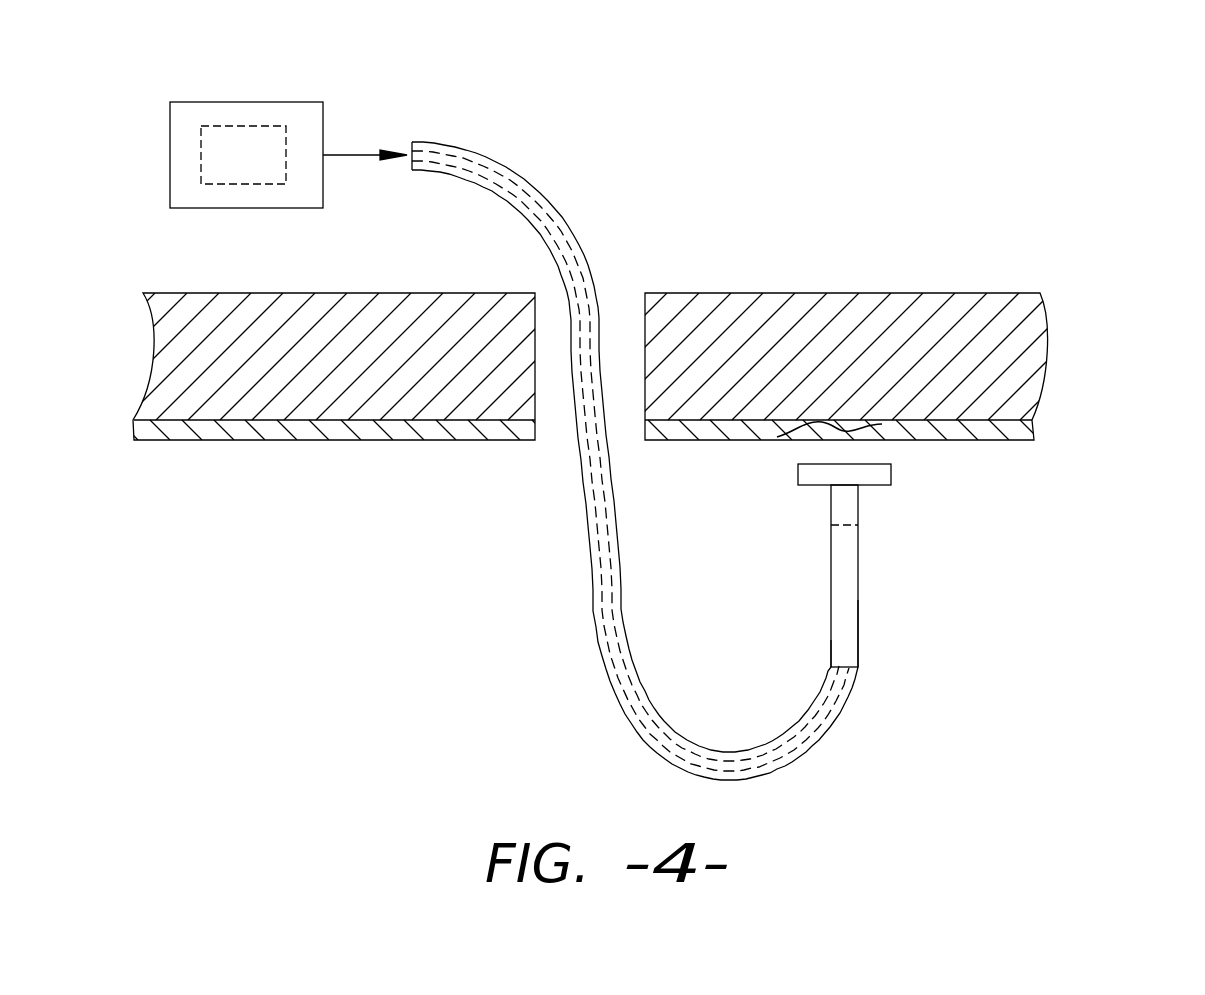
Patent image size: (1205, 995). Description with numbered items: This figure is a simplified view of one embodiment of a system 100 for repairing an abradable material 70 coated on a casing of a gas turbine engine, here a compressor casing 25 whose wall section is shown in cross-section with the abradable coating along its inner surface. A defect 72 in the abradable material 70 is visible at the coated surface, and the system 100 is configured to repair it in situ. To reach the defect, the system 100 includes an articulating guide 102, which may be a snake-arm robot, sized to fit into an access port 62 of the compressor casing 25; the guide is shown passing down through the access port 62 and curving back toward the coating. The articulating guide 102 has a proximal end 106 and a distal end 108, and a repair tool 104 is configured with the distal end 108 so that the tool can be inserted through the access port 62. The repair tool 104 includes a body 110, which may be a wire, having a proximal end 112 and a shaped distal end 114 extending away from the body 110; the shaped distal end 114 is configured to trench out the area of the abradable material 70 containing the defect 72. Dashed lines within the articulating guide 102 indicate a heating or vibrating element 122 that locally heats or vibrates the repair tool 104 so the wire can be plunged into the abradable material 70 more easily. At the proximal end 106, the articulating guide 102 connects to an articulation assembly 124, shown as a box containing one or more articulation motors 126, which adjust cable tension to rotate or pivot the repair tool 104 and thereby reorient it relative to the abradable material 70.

The system 100 is at (1092, 231).
The articulating guide 102 is at (578, 224).
The repair tool 104 is at (864, 554).
The proximal end 106 is at (443, 141).
The distal end 108 is at (848, 707).
The body 110 is at (859, 618).
The proximal end 112 is at (830, 653).
The shaped distal end 114 is at (892, 473).
The heating or vibrating element 122 is at (515, 176).
The articulation assembly 124 is at (225, 100).
The articulation motor 126 is at (232, 185).
The compressor casing 25 is at (906, 290).
The access port 62 is at (624, 296).
The abradable material 70 is at (974, 446).
The defect 72 is at (805, 445).